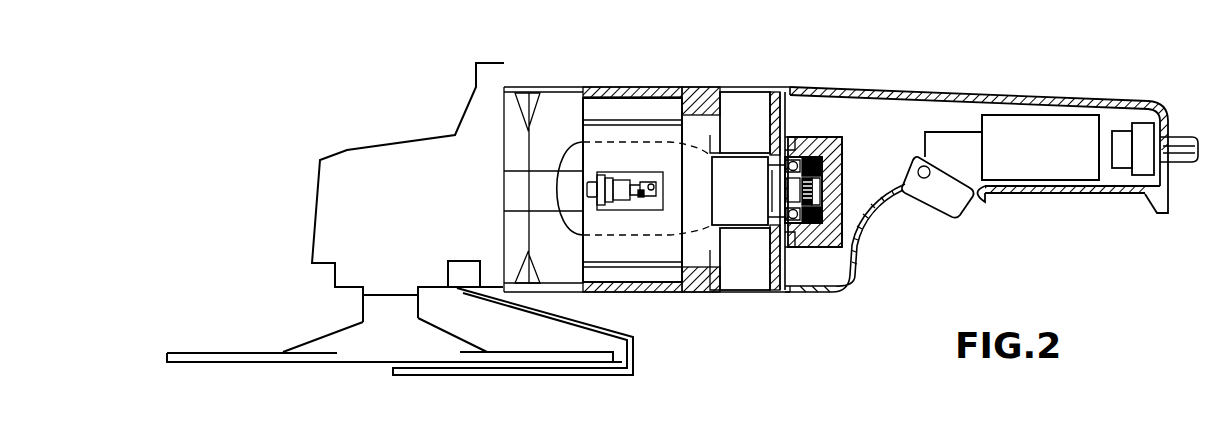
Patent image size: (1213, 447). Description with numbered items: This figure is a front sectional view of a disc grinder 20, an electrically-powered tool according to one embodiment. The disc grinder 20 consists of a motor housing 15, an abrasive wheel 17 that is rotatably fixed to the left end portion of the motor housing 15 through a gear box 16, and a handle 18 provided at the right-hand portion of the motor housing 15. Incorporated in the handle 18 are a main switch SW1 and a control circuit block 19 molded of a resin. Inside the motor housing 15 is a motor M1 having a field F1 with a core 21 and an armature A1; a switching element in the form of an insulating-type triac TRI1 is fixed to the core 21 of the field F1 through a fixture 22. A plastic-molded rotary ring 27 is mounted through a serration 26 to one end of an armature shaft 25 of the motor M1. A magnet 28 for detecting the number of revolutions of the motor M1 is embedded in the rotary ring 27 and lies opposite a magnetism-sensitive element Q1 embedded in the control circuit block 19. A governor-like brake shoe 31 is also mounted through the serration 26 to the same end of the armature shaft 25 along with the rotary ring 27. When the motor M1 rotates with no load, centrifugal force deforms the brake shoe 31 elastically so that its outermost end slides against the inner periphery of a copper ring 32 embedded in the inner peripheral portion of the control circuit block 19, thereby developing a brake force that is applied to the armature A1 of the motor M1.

The motor housing 15 is at (698, 291).
The gear box 16 is at (397, 147).
The abrasive wheel 17 is at (243, 362).
The handle 18 is at (933, 92).
The control circuit block 19 is at (843, 158).
The disc grinder 20 is at (737, 87).
The core 21 is at (665, 130).
The fixture 22 is at (655, 203).
The armature shaft 25 is at (777, 188).
The serration 26 is at (844, 168).
The rotary ring 27 is at (842, 198).
The magnet 28 is at (818, 248).
The brake shoe 31 is at (823, 153).
The copper ring 32 is at (807, 150).
The motor M1 is at (597, 127).
The triac TRI1 is at (620, 180).
The armature A1 is at (697, 163).
The field F1 is at (618, 253).
The magnetism-sensitive element Q1 is at (822, 208).
The main switch SW1 is at (1042, 123).